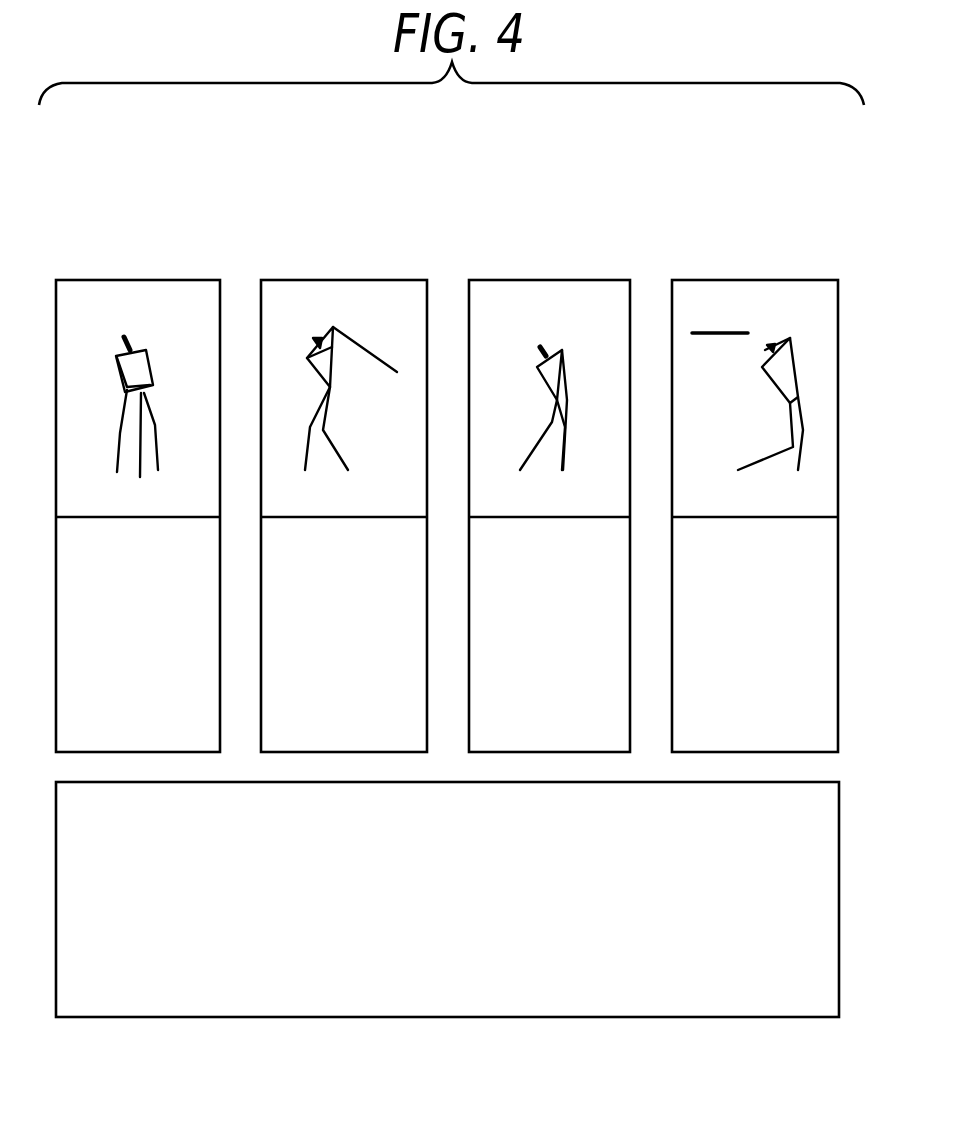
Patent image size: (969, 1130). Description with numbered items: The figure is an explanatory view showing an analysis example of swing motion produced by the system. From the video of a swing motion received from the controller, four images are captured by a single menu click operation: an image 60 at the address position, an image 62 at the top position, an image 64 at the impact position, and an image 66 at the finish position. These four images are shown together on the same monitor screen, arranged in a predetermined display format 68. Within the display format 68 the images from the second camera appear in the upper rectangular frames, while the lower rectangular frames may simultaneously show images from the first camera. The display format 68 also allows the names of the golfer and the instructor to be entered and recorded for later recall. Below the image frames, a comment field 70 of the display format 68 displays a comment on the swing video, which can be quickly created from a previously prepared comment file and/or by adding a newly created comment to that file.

The image at the address position 60 is at (192, 402).
The image at the top position 62 is at (398, 402).
The image at the impact position 64 is at (602, 403).
The image at the finish position 66 is at (815, 402).
The display format 68 is at (751, 251).
The comment field 70 is at (455, 1007).